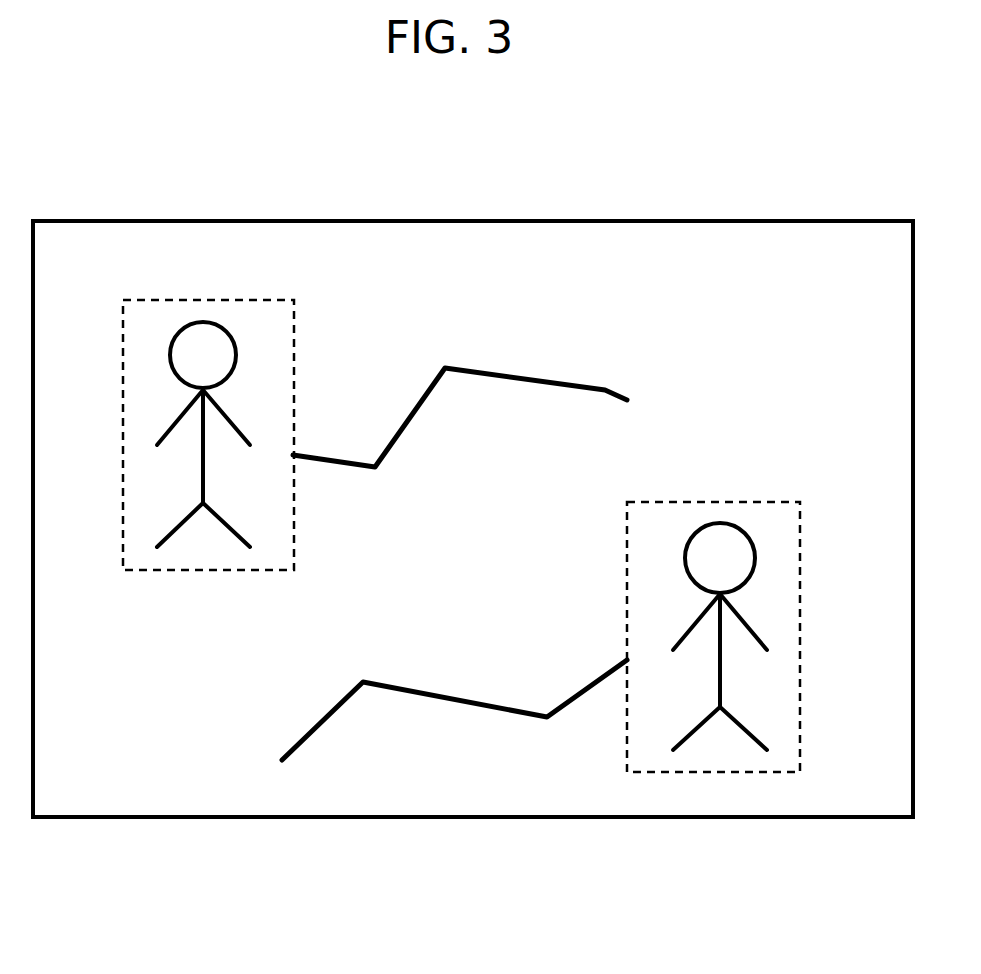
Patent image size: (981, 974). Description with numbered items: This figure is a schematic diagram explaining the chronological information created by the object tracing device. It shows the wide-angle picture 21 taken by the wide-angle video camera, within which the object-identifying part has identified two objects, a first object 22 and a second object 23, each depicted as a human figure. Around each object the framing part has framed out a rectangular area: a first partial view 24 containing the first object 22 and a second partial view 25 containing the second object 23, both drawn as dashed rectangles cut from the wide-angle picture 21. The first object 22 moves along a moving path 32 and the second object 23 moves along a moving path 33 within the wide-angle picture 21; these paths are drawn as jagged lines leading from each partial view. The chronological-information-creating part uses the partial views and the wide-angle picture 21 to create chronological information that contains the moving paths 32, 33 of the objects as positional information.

The wide-angle picture 21 is at (320, 220).
The first object 22 is at (234, 372).
The second object 23 is at (756, 555).
The first partial view 24 is at (295, 422).
The second partial view 25 is at (753, 502).
The moving path 32 is at (550, 382).
The moving path 33 is at (432, 693).